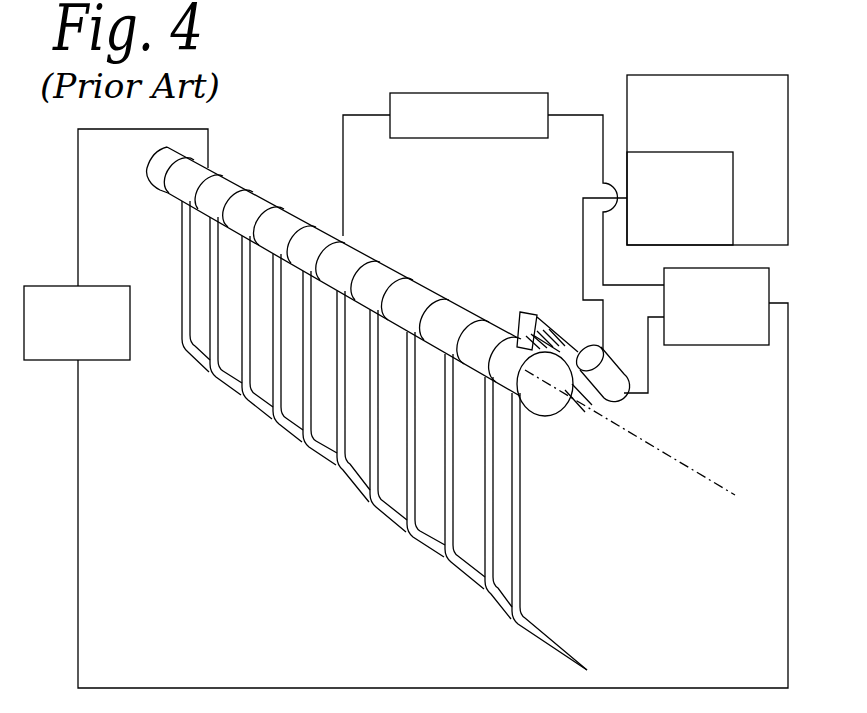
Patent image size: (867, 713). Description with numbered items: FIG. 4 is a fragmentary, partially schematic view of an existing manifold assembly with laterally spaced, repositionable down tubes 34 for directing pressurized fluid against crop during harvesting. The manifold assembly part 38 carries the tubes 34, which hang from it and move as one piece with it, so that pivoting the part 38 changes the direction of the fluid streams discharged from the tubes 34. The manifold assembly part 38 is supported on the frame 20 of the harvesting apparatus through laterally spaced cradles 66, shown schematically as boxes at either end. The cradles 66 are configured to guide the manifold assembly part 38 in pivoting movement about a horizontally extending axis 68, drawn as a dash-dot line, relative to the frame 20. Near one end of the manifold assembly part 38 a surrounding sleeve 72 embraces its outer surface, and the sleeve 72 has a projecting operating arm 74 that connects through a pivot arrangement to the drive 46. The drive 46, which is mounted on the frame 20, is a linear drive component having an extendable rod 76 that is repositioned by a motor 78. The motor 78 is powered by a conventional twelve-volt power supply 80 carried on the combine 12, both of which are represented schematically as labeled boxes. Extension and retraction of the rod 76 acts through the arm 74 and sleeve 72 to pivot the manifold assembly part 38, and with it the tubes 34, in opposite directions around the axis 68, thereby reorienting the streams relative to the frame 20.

The combine 12 is at (737, 132).
The frame 20 is at (727, 325).
The down tubes 34 is at (383, 512).
The manifold assembly part 38 is at (433, 245).
The drive 46 is at (550, 308).
The cradles 66 is at (86, 348).
The axis 68 is at (690, 473).
The sleeve 72 is at (513, 340).
The operating arm 74 is at (518, 322).
The extendable rod 76 is at (538, 417).
The motor 78 is at (600, 407).
The power supply 80 is at (691, 233).